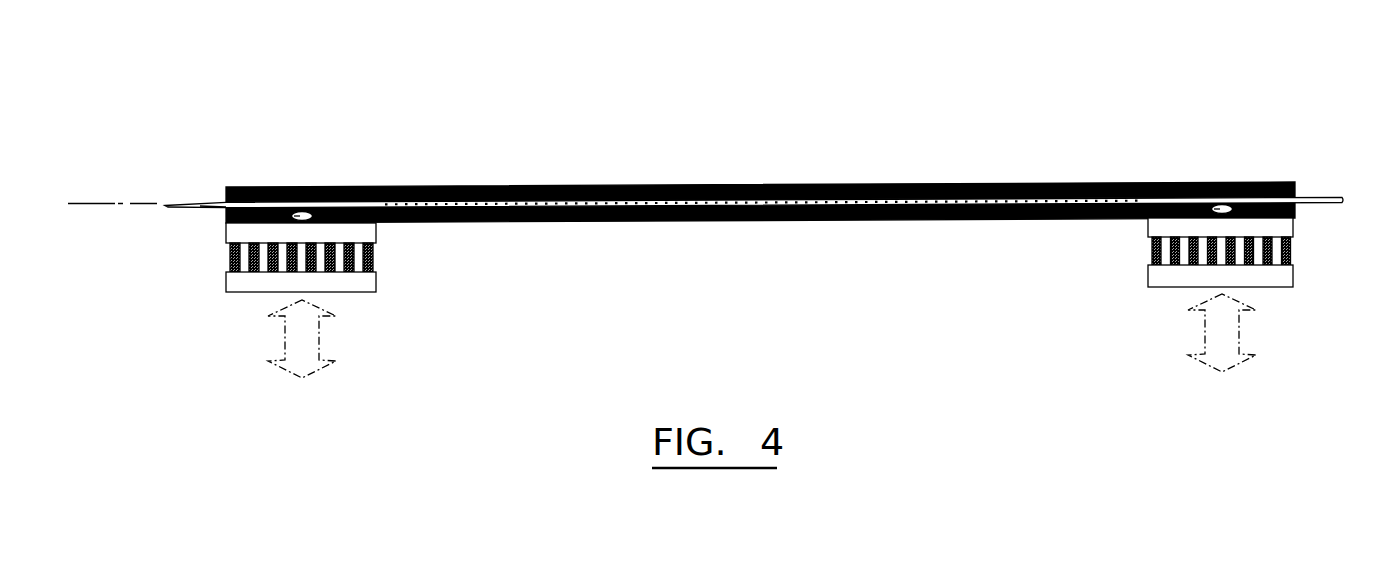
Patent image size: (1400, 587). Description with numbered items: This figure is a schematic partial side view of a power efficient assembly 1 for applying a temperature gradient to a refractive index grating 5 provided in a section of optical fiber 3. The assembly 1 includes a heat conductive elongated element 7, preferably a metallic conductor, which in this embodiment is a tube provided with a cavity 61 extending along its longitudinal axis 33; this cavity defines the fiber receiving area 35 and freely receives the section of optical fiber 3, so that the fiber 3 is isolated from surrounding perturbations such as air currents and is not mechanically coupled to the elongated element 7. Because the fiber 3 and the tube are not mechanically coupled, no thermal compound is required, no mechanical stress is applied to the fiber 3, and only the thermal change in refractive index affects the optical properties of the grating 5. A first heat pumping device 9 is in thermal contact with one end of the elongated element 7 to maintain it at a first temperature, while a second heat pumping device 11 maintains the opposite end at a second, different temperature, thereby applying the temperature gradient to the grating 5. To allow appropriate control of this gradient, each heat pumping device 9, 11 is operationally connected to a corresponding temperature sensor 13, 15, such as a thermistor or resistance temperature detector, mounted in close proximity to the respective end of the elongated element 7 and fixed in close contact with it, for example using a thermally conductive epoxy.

The power efficient assembly 1 is at (714, 88).
The optical fiber 3 is at (546, 187).
The refractive index grating 5 is at (168, 205).
The heat conductive elongated element 7 is at (616, 187).
The first heat pumping device 9 is at (230, 284).
The second heat pumping device 11 is at (1288, 272).
The temperature sensor 13 is at (280, 208).
The temperature sensor 15 is at (1247, 200).
The longitudinal axis 33 is at (96, 203).
The fiber receiving area 35 is at (1299, 193).
The cavity 61 is at (221, 210).